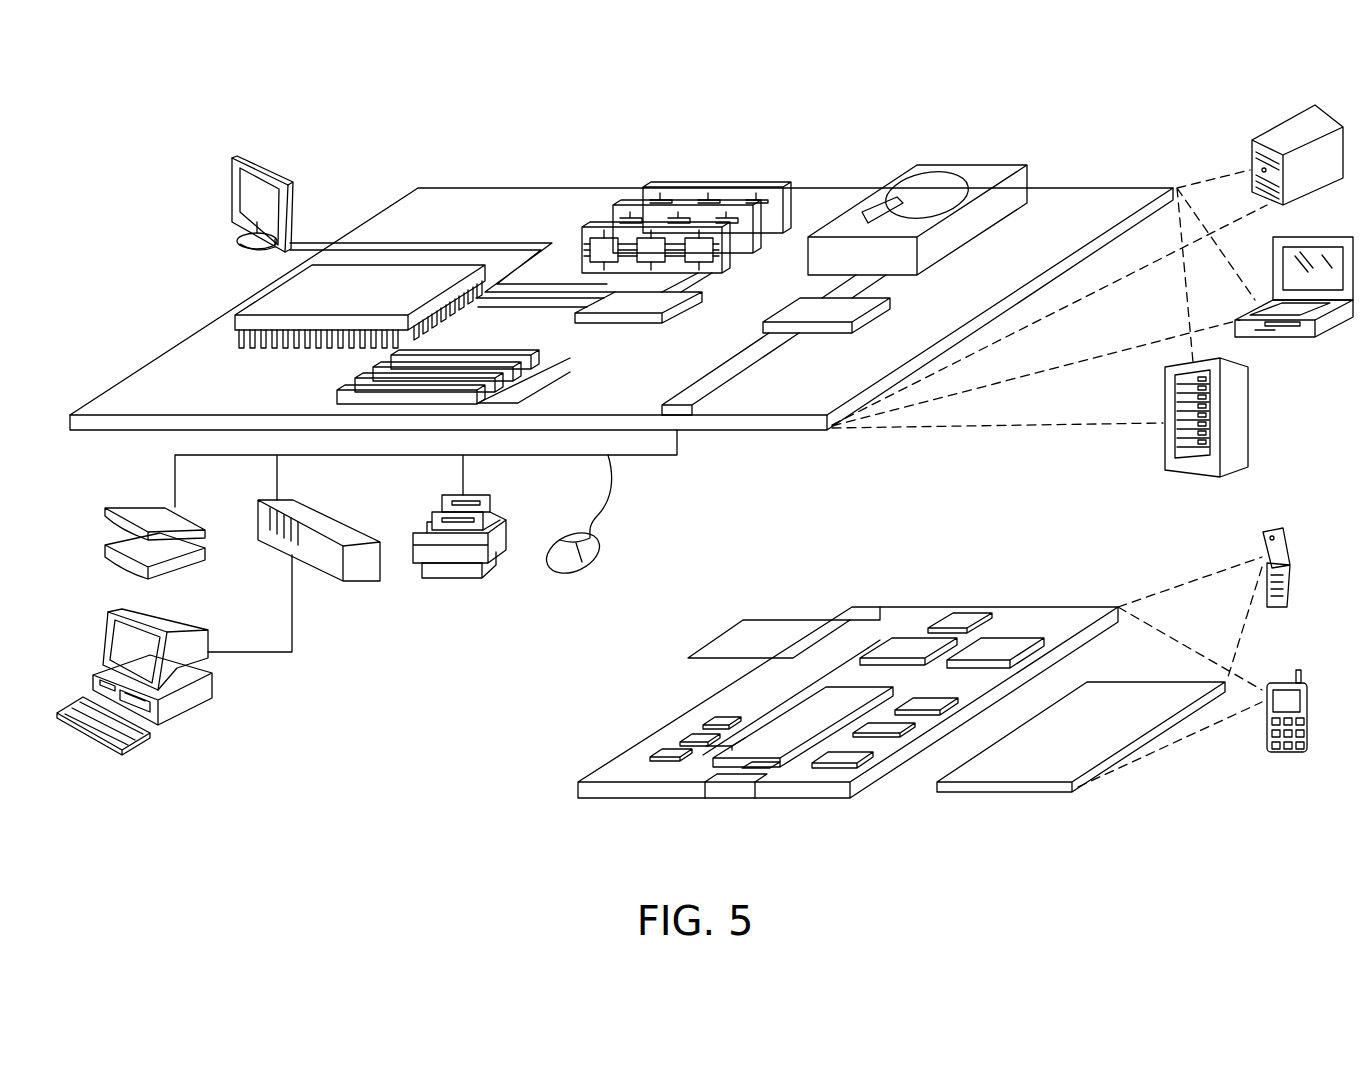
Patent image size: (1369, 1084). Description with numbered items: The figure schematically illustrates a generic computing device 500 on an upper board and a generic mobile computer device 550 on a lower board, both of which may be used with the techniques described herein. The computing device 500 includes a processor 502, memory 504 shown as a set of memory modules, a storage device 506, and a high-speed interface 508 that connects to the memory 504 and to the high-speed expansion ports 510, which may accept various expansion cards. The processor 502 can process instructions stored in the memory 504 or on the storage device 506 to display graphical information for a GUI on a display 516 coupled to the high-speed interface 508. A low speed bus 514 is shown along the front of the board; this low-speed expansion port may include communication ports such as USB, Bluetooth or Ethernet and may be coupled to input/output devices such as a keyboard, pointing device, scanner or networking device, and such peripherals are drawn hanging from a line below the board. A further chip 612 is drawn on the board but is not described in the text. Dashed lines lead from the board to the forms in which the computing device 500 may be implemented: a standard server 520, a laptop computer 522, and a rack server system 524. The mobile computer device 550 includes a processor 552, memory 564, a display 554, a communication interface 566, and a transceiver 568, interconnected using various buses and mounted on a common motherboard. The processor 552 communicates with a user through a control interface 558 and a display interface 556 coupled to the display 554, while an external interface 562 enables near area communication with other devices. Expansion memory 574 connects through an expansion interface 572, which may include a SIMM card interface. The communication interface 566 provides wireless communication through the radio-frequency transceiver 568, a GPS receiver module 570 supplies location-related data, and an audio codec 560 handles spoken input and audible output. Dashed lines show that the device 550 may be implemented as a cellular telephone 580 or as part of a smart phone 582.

The computing device 500 is at (366, 133).
The processor 502 is at (262, 298).
The memory 504 is at (724, 184).
The storage device 506 is at (961, 163).
The high-speed interface 508 is at (652, 301).
The high-speed expansion ports 510 is at (360, 380).
The low speed bus 514 is at (682, 400).
The display 516 is at (232, 157).
The standard server 520 is at (1273, 132).
The laptop computer 522 is at (1331, 237).
The rack server system 524 is at (1250, 418).
The mobile computer device 550 is at (530, 808).
The processor 552 is at (773, 730).
The display 554 is at (1120, 691).
The display interface 556 is at (858, 756).
The control interface 558 is at (892, 727).
The audio codec 560 is at (932, 698).
The external interface 562 is at (731, 786).
The memory 564 is at (680, 740).
The communication interface 566 is at (906, 642).
The transceiver 568 is at (1002, 645).
The GPS receiver module 570 is at (960, 617).
The expansion interface 572 is at (830, 618).
The expansion memory 574 is at (746, 618).
The cellular telephone 580 is at (1275, 527).
The smart phone 582 is at (1285, 683).
The chip 612 is at (800, 304).